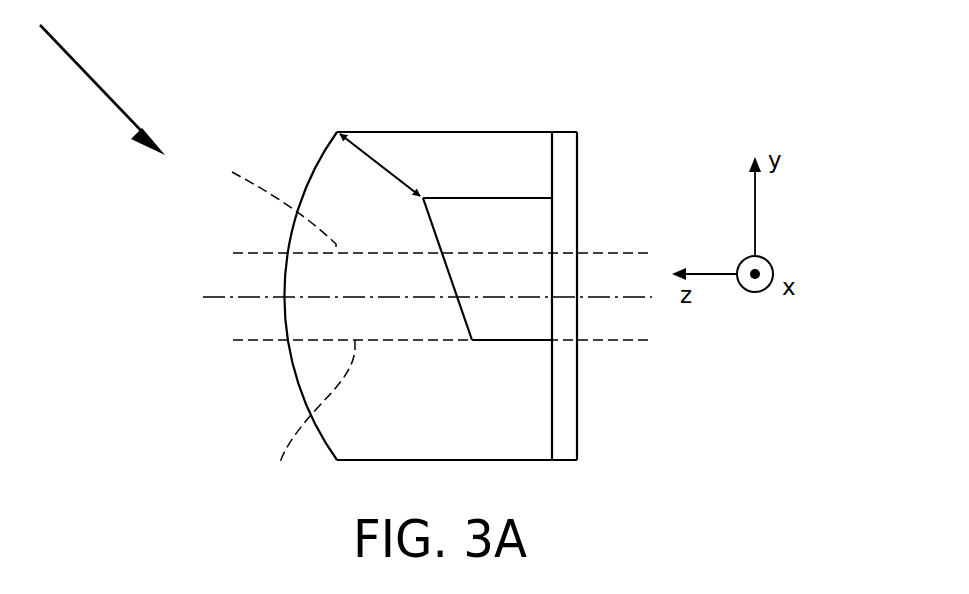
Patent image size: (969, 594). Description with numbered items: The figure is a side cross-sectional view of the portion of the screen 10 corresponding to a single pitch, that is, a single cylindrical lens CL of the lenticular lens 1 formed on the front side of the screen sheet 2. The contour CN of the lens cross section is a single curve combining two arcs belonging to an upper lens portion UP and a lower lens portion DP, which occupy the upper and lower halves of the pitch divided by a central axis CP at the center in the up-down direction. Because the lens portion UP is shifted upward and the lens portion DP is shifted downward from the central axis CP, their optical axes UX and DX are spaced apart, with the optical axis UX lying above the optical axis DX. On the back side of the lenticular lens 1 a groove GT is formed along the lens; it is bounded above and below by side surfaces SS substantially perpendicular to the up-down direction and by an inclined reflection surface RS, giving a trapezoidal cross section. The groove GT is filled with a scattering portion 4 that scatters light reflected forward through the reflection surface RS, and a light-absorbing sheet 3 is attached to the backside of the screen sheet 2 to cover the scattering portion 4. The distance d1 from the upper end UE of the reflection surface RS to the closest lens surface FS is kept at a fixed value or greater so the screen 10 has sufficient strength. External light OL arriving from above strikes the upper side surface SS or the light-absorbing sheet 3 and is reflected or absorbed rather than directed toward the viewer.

The lenticular lens 1 is at (323, 152).
The screen sheet 2 is at (477, 152).
The light-absorbing sheet 3 is at (565, 183).
The scattering portion 4 is at (537, 287).
The screen 10 is at (670, 88).
The external light OL is at (88, 67).
The cylindrical lens CL is at (328, 185).
The optical axis of upper lens portion UX is at (422, 202).
The upper lens portion UP is at (288, 217).
The central axis CP is at (228, 297).
The contour CN is at (284, 320).
The lower lens portion DP is at (284, 366).
The optical axis of lower lens portion DX is at (442, 417).
The lens surface FS is at (350, 167).
The upper end of reflection surface UE is at (423, 198).
The side surface SS is at (517, 198).
The groove GT is at (507, 215).
The reflection surface RS is at (460, 308).
The distance d1 is at (412, 196).